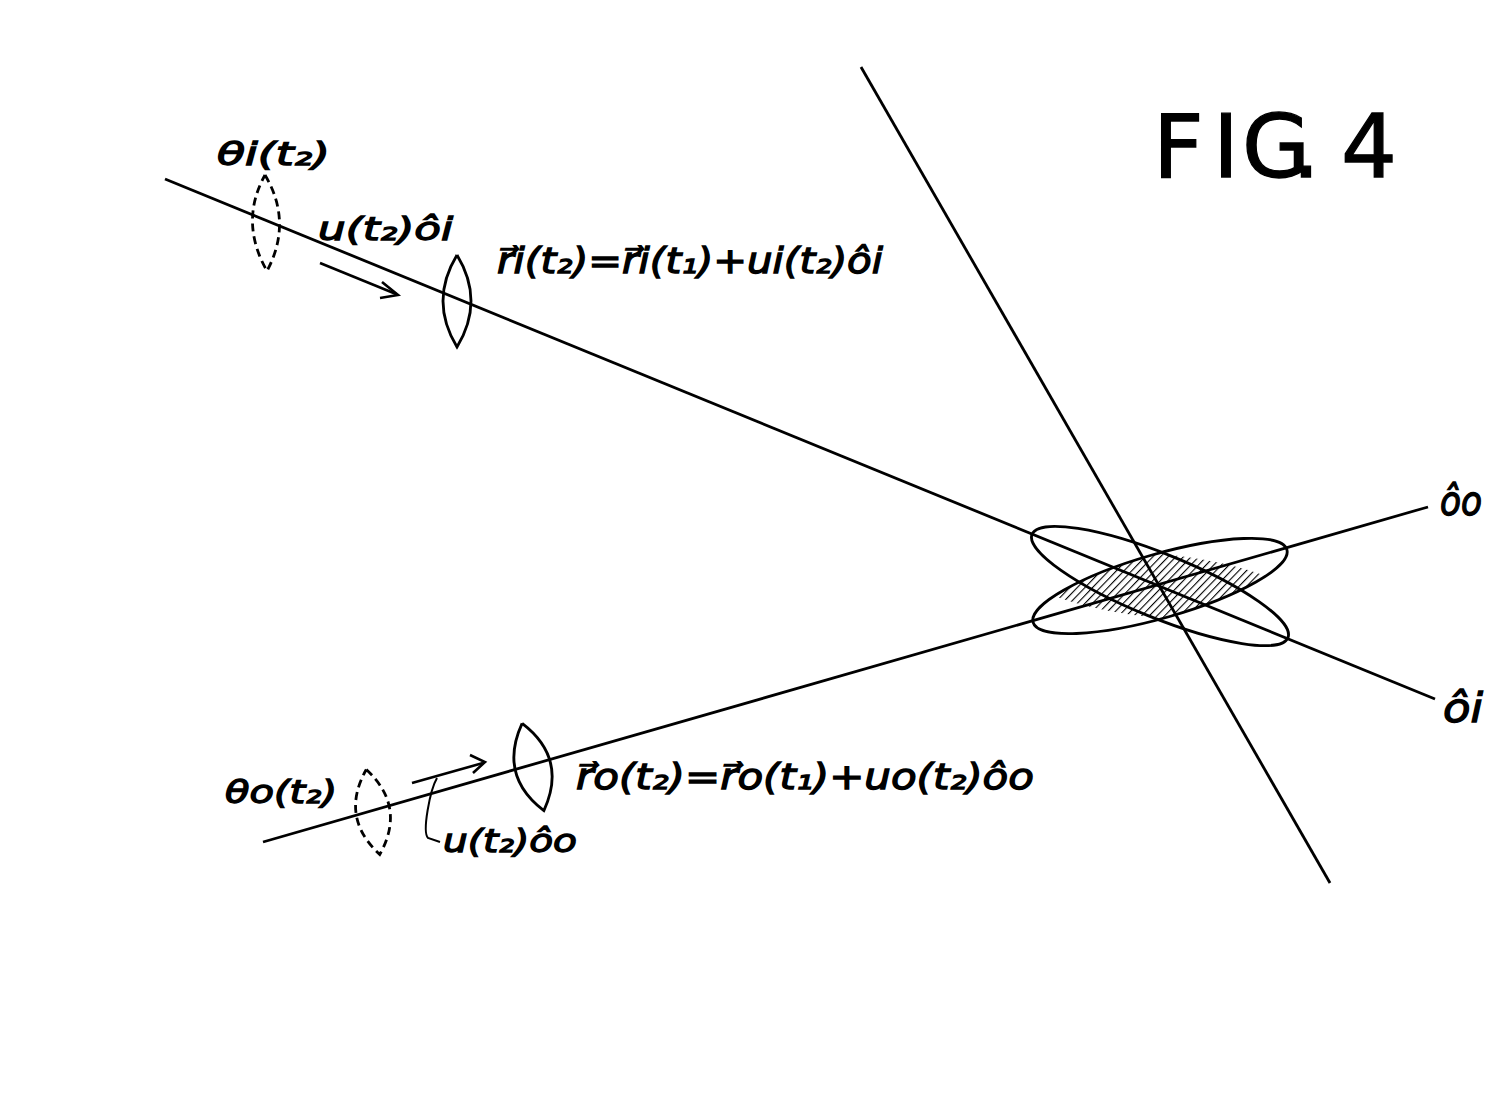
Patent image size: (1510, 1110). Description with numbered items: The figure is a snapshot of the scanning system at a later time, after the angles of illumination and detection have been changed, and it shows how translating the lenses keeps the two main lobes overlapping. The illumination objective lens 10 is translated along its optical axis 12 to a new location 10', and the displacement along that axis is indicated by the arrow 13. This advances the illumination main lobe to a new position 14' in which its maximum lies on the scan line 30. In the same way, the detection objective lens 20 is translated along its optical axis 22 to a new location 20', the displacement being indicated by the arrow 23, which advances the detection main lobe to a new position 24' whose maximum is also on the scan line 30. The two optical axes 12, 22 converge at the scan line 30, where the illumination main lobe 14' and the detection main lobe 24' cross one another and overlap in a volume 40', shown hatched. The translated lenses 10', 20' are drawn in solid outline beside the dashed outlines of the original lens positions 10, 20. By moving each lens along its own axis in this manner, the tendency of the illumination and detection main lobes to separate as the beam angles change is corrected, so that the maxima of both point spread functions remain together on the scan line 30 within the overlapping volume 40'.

The illumination objective lens 10 is at (234, 235).
The new location of illumination objective lens 10' is at (425, 317).
The optical axis of illumination objective lens 12 is at (640, 373).
The displacement vector of first lens 13 is at (350, 278).
The new position of illumination main lobe 14' is at (1195, 586).
The detection objective lens 20 is at (378, 791).
The new location of detection objective lens 20' is at (549, 745).
The optical axis of detection objective lens 22 is at (780, 697).
The displacement vector of second lens 23 is at (448, 767).
The new position of detection main lobe 24' is at (1166, 569).
The scan line 30 is at (1307, 832).
The overlapping volume 40' is at (1159, 596).